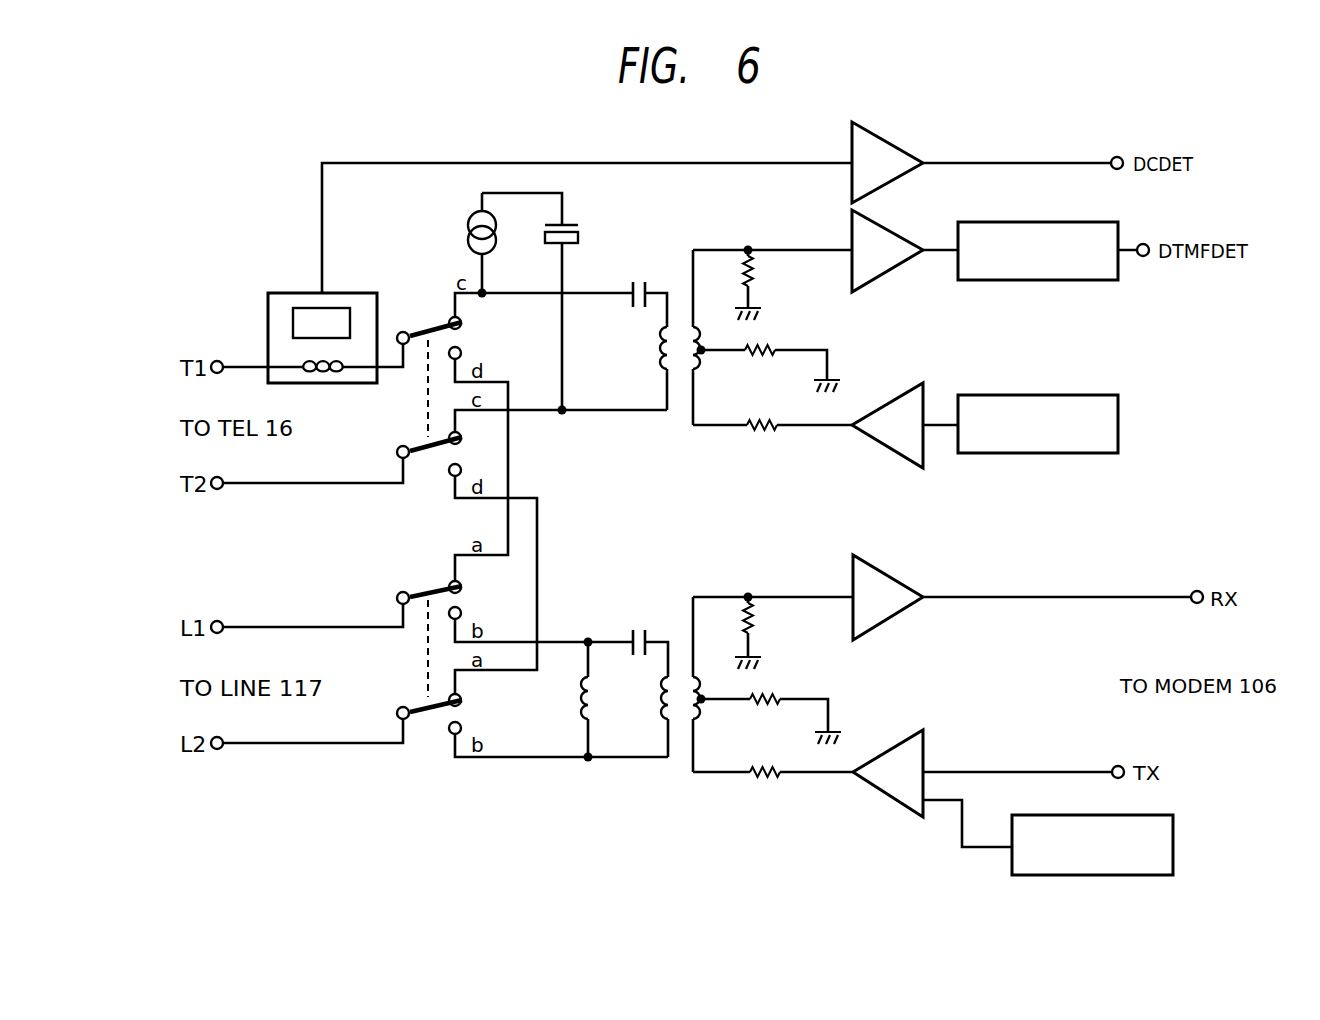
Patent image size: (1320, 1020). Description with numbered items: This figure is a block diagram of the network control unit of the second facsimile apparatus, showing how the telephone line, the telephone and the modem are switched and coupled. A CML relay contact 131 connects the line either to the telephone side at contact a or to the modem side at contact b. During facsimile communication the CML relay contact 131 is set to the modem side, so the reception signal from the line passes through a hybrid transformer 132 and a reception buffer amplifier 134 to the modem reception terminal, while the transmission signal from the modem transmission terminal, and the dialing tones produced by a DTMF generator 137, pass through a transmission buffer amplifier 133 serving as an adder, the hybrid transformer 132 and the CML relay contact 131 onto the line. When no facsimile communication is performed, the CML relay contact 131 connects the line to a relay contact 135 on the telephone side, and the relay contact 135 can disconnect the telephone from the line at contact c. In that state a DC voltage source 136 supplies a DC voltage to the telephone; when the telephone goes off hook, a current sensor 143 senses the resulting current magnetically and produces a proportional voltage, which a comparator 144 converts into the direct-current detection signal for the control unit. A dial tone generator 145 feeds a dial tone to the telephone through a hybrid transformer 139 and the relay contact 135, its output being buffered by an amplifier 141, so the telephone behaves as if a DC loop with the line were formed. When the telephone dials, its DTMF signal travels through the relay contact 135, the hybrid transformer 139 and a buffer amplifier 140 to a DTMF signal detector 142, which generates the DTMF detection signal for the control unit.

The CML relay contact 131 is at (427, 642).
The hybrid transformer 132 is at (682, 674).
The transmission buffer amplifier 133 is at (877, 796).
The reception buffer amplifier 134 is at (851, 568).
The relay contact 135 is at (427, 397).
The DC voltage source 136 is at (578, 222).
The DTMF generator 137 is at (1175, 832).
The hybrid transformer 139 is at (682, 325).
The buffer amplifier 140 is at (850, 222).
The dial tone amplifier 141 is at (875, 454).
The DTMF signal detector 142 is at (1068, 282).
The current sensor 143 is at (350, 291).
The comparator 144 is at (850, 134).
The dial tone generator 145 is at (1120, 412).